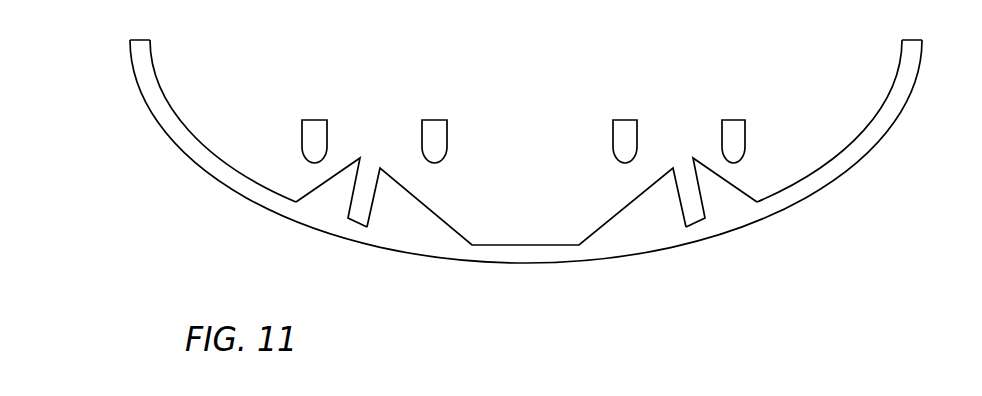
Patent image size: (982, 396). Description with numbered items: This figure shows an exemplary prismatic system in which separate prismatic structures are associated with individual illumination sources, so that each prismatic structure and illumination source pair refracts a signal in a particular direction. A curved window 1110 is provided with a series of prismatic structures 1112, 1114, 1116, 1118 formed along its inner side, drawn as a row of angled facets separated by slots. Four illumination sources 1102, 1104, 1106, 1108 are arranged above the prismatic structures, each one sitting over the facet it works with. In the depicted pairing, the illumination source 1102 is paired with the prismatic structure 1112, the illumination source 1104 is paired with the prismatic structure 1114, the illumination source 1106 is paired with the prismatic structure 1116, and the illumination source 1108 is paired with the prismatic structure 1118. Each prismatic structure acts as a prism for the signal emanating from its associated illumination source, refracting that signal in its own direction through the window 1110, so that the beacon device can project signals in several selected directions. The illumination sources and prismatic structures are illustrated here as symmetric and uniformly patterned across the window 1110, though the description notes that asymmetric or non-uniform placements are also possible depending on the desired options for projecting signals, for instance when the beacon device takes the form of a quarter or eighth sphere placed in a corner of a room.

The illumination source 1102 is at (313, 120).
The illumination source 1104 is at (433, 120).
The illumination source 1106 is at (623, 120).
The illumination source 1108 is at (733, 120).
The window 1110 is at (203, 153).
The prismatic structure 1112 is at (332, 197).
The prismatic structure 1114 is at (400, 208).
The prismatic structure 1116 is at (662, 213).
The prismatic structure 1118 is at (733, 210).